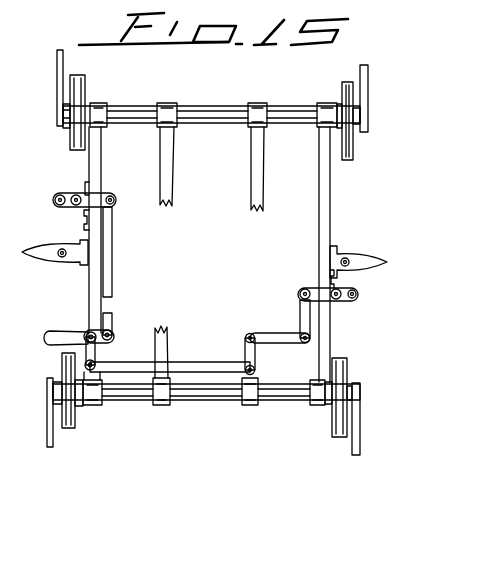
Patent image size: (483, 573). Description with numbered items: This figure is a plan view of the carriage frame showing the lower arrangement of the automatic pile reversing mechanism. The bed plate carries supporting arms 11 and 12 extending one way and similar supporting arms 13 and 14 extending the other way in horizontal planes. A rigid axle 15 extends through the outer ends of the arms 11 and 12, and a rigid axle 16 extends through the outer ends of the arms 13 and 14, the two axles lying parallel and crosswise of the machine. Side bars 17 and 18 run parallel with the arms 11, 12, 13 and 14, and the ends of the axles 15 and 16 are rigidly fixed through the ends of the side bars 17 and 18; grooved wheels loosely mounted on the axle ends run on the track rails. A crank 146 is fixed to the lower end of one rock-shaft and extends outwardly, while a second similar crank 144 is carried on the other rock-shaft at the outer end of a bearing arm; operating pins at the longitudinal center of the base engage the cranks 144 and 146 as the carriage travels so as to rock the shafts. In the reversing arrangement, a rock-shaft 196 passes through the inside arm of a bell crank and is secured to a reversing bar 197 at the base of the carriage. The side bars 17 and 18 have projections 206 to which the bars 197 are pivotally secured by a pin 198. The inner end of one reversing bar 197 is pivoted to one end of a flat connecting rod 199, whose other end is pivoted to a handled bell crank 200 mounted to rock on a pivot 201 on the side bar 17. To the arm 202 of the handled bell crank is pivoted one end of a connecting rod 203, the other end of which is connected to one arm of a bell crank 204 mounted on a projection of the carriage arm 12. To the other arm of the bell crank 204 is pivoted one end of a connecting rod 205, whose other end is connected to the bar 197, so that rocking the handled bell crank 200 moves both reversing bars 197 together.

The supporting arm 11 is at (160, 394).
The supporting arm 12 is at (250, 400).
The supporting arm 13 is at (165, 105).
The supporting arm 14 is at (257, 105).
The rigid axle 15 is at (125, 388).
The rigid axle 16 is at (128, 110).
The side bar 17 is at (102, 301).
The side bar 18 is at (318, 207).
The crank 144 is at (33, 258).
The crank 146 is at (370, 258).
The rock-shaft 196 is at (76, 195).
The reversing bar 197 is at (95, 200).
The pin 198 is at (55, 198).
The flat connecting rod 199 is at (113, 245).
The handled bell crank 200 is at (48, 336).
The pivot 201 is at (88, 330).
The arm 202 is at (96, 353).
The connecting rod 203 is at (200, 355).
The bell crank 204 is at (255, 348).
The connecting rod 205 is at (300, 316).
The projection 206 is at (86, 215).